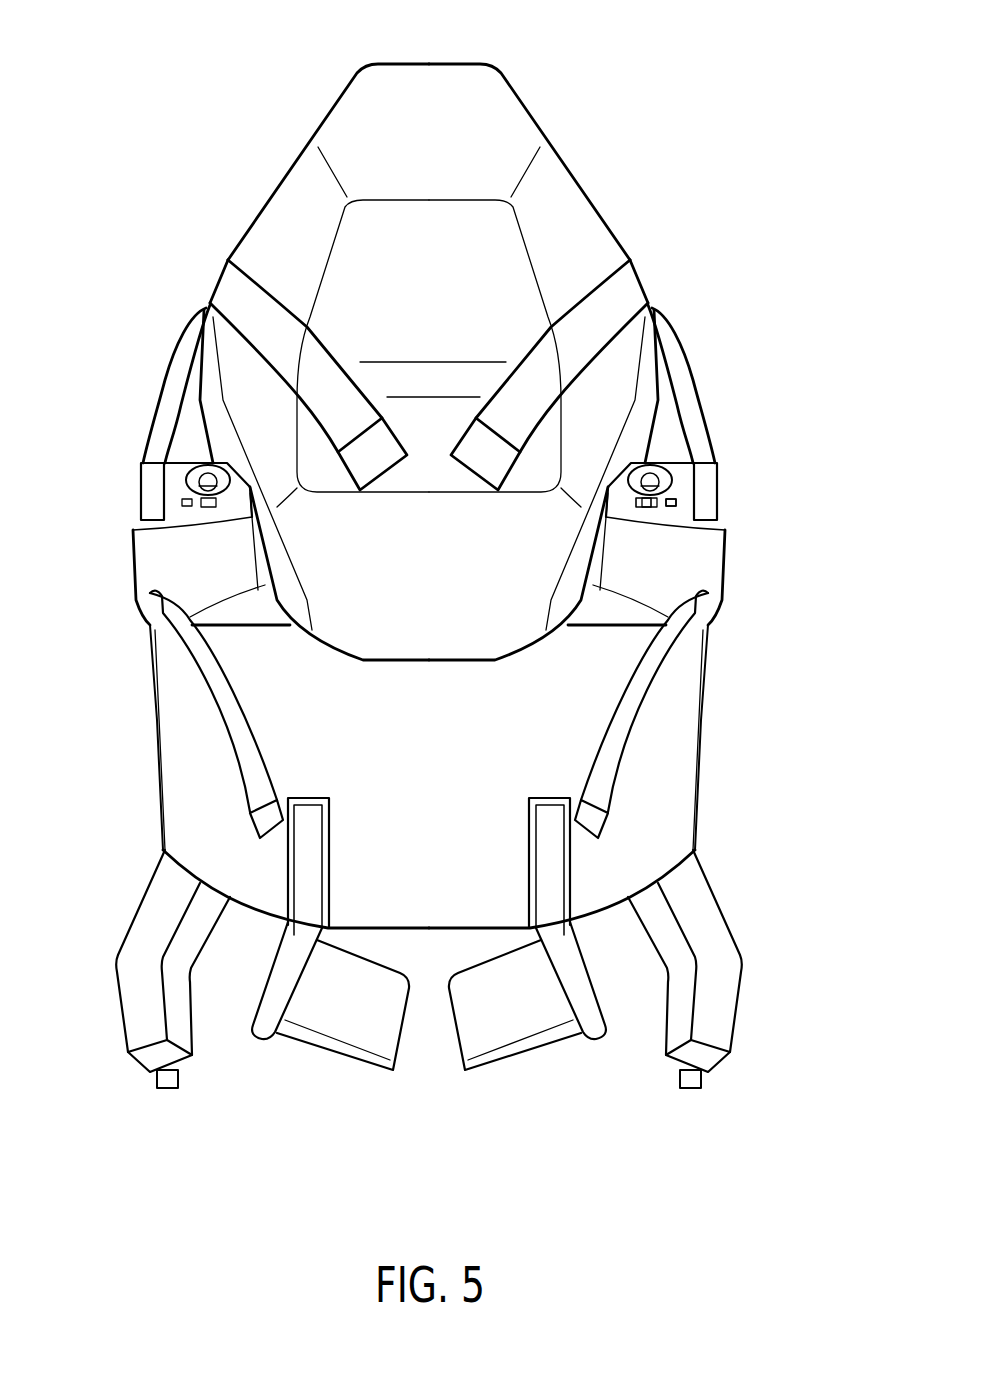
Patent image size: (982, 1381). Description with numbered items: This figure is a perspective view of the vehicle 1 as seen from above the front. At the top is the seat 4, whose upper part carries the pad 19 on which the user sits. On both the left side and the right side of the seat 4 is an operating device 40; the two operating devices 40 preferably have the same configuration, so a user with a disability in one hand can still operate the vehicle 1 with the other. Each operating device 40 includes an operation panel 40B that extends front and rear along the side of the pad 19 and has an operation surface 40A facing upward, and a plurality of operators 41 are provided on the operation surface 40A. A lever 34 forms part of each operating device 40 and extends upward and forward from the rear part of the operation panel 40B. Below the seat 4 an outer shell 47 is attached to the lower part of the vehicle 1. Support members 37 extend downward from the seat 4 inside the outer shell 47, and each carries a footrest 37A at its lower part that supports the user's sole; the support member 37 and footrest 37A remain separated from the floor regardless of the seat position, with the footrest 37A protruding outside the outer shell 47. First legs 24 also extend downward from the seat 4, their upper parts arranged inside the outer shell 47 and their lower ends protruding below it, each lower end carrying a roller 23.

The vehicle 1 is at (108, 65).
The seat 4 is at (323, 78).
The pad 19 is at (517, 111).
The roller 23 is at (168, 1078).
The first leg 24 is at (147, 927).
The lever 34 is at (165, 392).
The support member 37 is at (310, 872).
The footrest 37A is at (357, 1028).
The operating device 40 is at (434, 544).
The operation surface 40A is at (680, 527).
The operation panel 40B is at (717, 550).
The operators 41 is at (636, 530).
The outer shell 47 is at (183, 708).